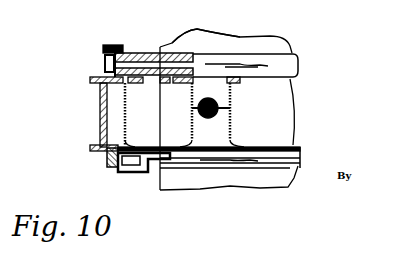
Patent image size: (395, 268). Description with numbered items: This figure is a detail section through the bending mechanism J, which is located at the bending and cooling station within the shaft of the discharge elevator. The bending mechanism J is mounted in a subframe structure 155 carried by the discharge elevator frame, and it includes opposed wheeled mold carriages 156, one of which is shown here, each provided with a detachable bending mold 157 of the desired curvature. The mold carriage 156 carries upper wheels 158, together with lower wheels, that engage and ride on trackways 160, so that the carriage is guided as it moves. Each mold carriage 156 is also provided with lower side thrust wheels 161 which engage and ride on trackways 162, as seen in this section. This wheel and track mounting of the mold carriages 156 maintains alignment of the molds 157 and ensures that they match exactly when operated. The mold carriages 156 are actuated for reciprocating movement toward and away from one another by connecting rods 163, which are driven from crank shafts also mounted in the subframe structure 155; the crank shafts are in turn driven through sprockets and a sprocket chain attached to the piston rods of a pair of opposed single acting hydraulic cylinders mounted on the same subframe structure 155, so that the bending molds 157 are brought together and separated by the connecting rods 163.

The subframe structure 155 is at (101, 113).
The mold carriage 156 is at (268, 78).
The bending mold 157 is at (221, 42).
The upper wheel 158 is at (104, 58).
The trackway 160 is at (93, 85).
The lower side thrust wheel 161 is at (116, 168).
The trackway 162 is at (106, 160).
The connecting rod 163 is at (222, 110).
The bending mechanism J is at (300, 88).